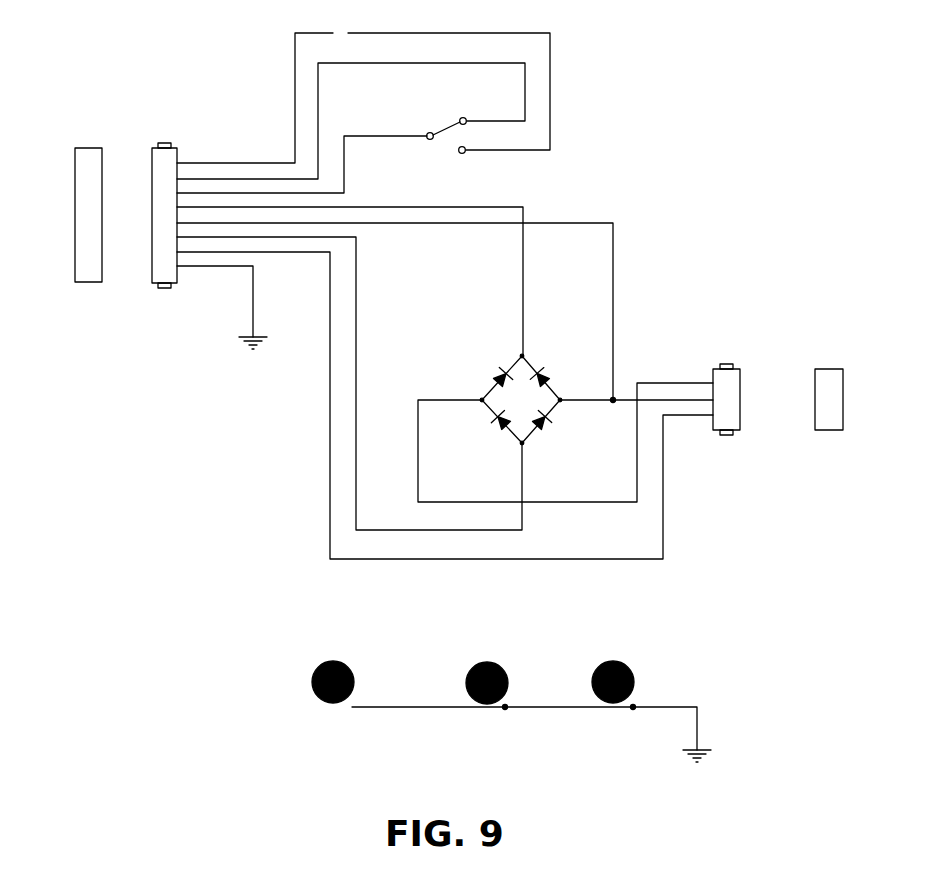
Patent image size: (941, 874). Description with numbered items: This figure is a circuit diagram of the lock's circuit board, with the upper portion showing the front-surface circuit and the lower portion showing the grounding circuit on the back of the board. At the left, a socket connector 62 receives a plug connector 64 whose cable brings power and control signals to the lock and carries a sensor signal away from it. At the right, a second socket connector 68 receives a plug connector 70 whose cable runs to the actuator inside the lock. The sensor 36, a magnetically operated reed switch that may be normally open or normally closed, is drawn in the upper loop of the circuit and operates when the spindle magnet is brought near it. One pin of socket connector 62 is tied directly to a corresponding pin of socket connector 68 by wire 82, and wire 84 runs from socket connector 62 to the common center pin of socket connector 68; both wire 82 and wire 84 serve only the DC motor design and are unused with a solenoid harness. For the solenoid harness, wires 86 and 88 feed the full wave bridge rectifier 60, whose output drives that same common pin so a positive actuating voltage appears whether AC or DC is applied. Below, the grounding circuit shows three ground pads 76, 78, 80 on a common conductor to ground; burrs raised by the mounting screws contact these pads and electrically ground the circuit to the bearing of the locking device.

The sensor 36 is at (418, 108).
The full wave bridge rectifier 60 is at (482, 354).
The socket connector 62 is at (176, 289).
The plug connector 64 is at (88, 158).
The socket connector 68 is at (740, 431).
The plug connector 70 is at (840, 372).
The ground pad 76 is at (313, 688).
The ground pad 78 is at (468, 683).
The ground pad 80 is at (595, 683).
The wire 82 is at (663, 543).
The wire 84 is at (613, 247).
The wire 86 is at (523, 288).
The wire 88 is at (522, 530).